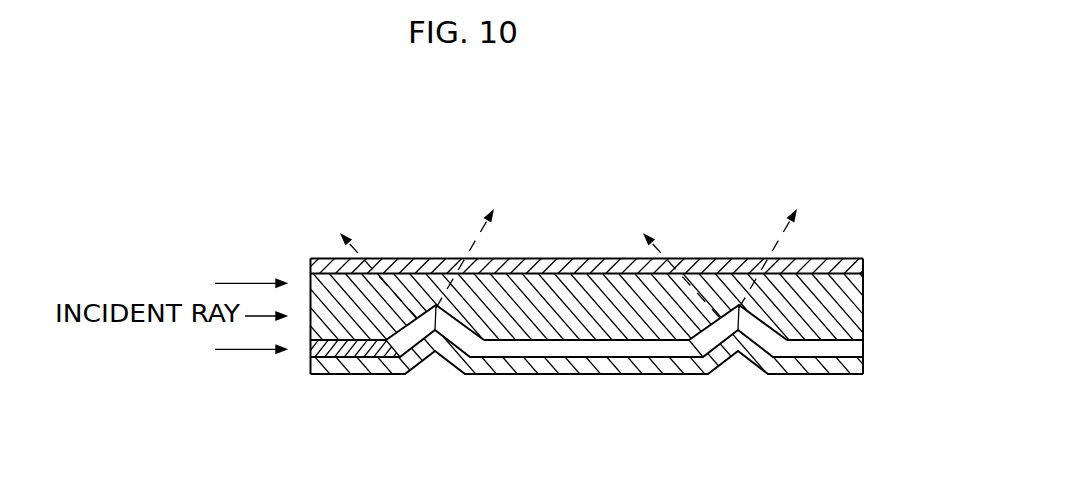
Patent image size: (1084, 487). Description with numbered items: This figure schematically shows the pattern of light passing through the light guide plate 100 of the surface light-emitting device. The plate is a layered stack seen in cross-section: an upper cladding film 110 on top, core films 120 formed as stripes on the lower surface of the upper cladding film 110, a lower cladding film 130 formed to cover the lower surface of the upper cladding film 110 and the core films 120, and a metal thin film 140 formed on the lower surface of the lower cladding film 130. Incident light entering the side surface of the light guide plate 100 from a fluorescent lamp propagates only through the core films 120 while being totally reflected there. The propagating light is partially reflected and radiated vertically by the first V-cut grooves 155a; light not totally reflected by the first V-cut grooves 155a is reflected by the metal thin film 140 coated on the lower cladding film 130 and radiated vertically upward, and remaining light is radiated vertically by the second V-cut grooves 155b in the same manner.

The light guide plate 100 is at (833, 245).
The upper cladding film 110 is at (865, 272).
The core films 120 is at (866, 302).
The lower cladding film 130 is at (856, 351).
The metal thin film 140 is at (856, 366).
The first V-cut grooves 155a is at (457, 335).
The second V-cut grooves 155b is at (766, 328).